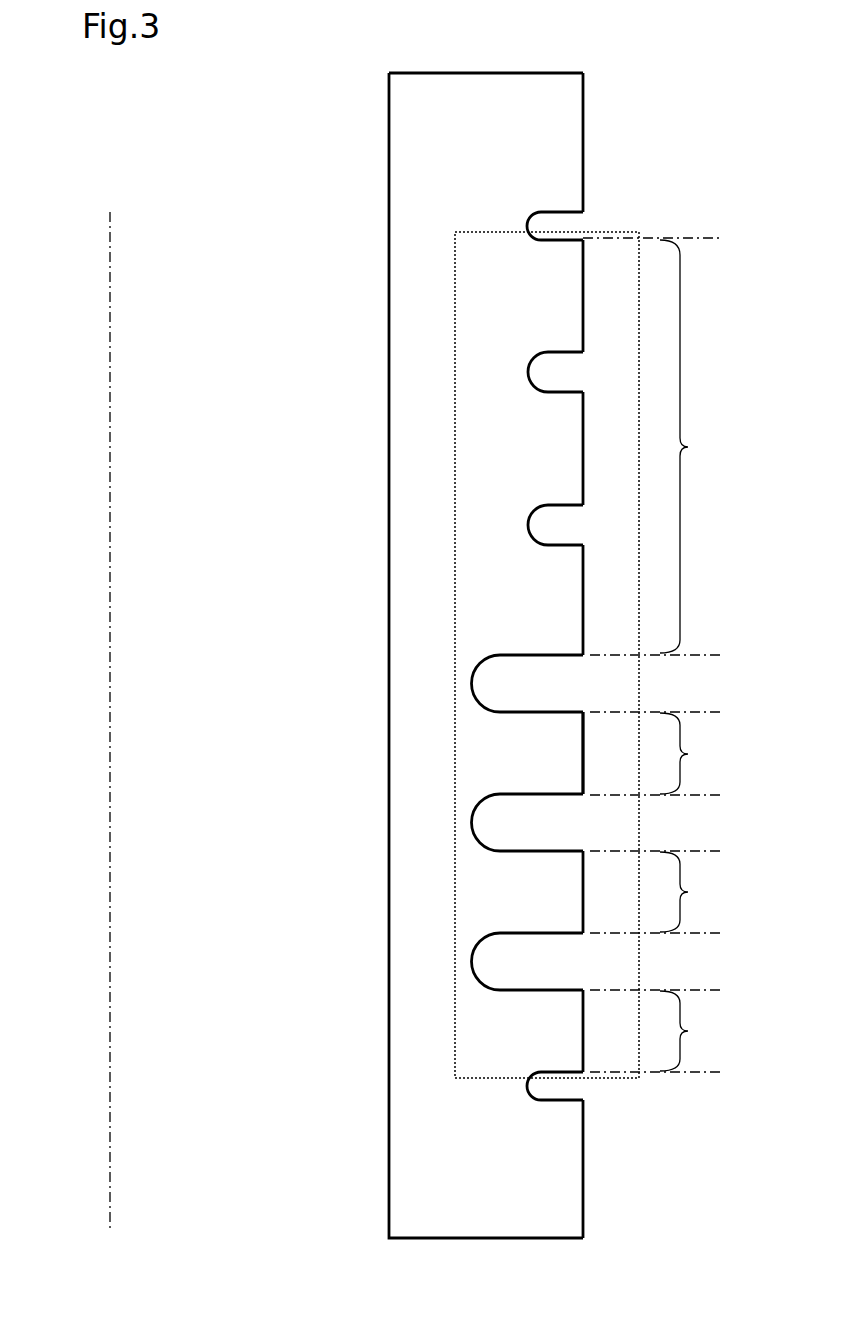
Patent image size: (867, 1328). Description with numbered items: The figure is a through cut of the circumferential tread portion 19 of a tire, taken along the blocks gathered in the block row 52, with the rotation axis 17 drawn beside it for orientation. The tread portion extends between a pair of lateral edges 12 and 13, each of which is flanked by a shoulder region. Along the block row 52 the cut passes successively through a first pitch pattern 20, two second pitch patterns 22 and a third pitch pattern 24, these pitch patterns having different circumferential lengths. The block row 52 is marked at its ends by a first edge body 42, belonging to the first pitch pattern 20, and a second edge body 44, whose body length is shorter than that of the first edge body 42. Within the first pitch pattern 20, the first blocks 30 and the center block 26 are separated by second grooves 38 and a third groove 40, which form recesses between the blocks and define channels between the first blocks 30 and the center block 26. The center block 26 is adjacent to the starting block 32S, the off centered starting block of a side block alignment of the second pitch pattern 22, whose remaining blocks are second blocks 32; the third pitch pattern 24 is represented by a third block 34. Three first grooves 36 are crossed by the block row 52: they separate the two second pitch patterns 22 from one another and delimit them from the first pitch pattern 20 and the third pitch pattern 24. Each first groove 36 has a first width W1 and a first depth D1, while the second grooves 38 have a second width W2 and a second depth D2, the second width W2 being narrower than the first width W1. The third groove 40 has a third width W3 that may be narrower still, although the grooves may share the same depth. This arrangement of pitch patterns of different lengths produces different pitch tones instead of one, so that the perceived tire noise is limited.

The lateral edge 12 is at (583, 1238).
The lateral edge 13 is at (583, 73).
The rotation axis 17 is at (110, 640).
The circumferential tread portion 19 is at (262, 233).
The first pitch pattern 20 is at (661, 446).
The second pitch pattern 22 is at (659, 822).
The third pitch pattern 24 is at (663, 1031).
The center block 26 is at (560, 619).
The first block 30 is at (570, 304).
The second block 32 is at (502, 789).
The starting block 32S is at (581, 789).
The third block 34 is at (558, 1046).
The first groove 36 is at (543, 696).
The second groove 38 is at (568, 384).
The third groove 40 is at (527, 226).
The first edge body 42 is at (557, 179).
The second edge body 44 is at (570, 1169).
The block row 52 is at (455, 382).
The first width W1 is at (568, 655).
The second width W2 is at (583, 352).
The third width W3 is at (583, 240).
The first depth D1 is at (583, 722).
The second depth D2 is at (583, 406).